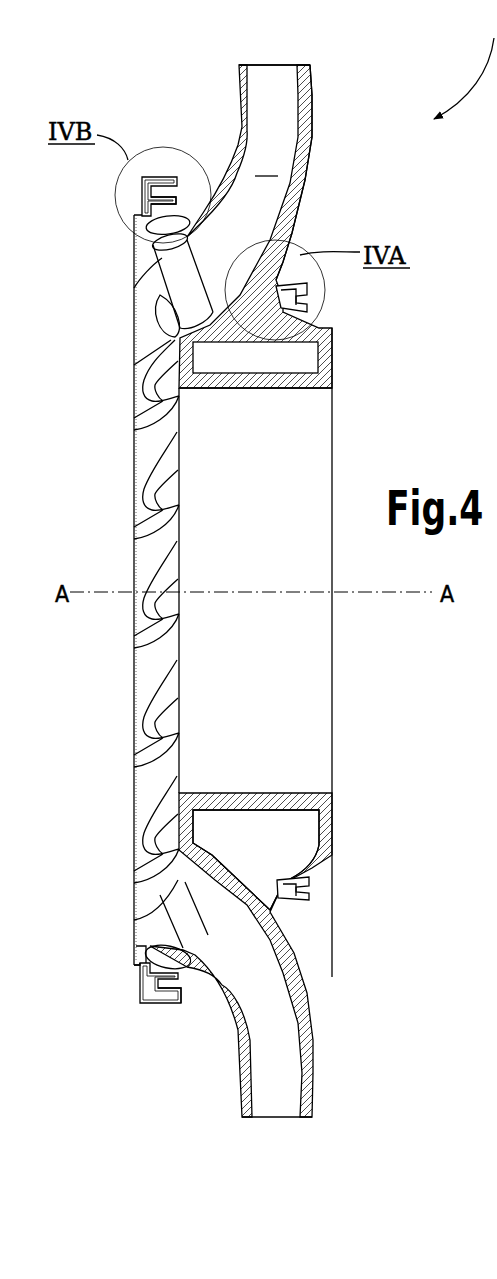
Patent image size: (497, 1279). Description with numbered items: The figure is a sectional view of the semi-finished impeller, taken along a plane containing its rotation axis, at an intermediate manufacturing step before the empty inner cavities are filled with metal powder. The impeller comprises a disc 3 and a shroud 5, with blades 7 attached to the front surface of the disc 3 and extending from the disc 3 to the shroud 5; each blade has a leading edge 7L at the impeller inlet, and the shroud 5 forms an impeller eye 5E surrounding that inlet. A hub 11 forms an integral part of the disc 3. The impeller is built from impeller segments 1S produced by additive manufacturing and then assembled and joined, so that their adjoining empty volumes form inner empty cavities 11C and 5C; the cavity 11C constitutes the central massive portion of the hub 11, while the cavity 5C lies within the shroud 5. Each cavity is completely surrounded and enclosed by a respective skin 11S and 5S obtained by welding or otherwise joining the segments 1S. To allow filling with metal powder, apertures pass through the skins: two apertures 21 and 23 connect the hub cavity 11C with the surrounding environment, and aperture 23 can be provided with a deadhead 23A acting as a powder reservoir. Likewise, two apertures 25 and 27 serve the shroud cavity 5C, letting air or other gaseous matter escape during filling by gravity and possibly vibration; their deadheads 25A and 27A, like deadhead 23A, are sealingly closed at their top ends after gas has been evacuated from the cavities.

The impeller segments 1S is at (317, 72).
The disc 3 is at (313, 146).
The shroud 5 is at (239, 78).
The inner empty cavity 5C is at (153, 232).
The skin 5S is at (148, 243).
The impeller eye 5E is at (143, 950).
The blades 7 is at (177, 614).
The leading edge 7L is at (157, 497).
The hub 11 is at (305, 705).
The inner empty cavity 11C is at (316, 343).
The skin 11S is at (270, 380).
The aperture 21 is at (305, 327).
The aperture 23 is at (278, 887).
The deadhead 23A is at (311, 886).
The aperture 25 is at (150, 215).
The deadhead 25A is at (175, 187).
The aperture 27 is at (140, 975).
The deadhead 27A is at (178, 1003).